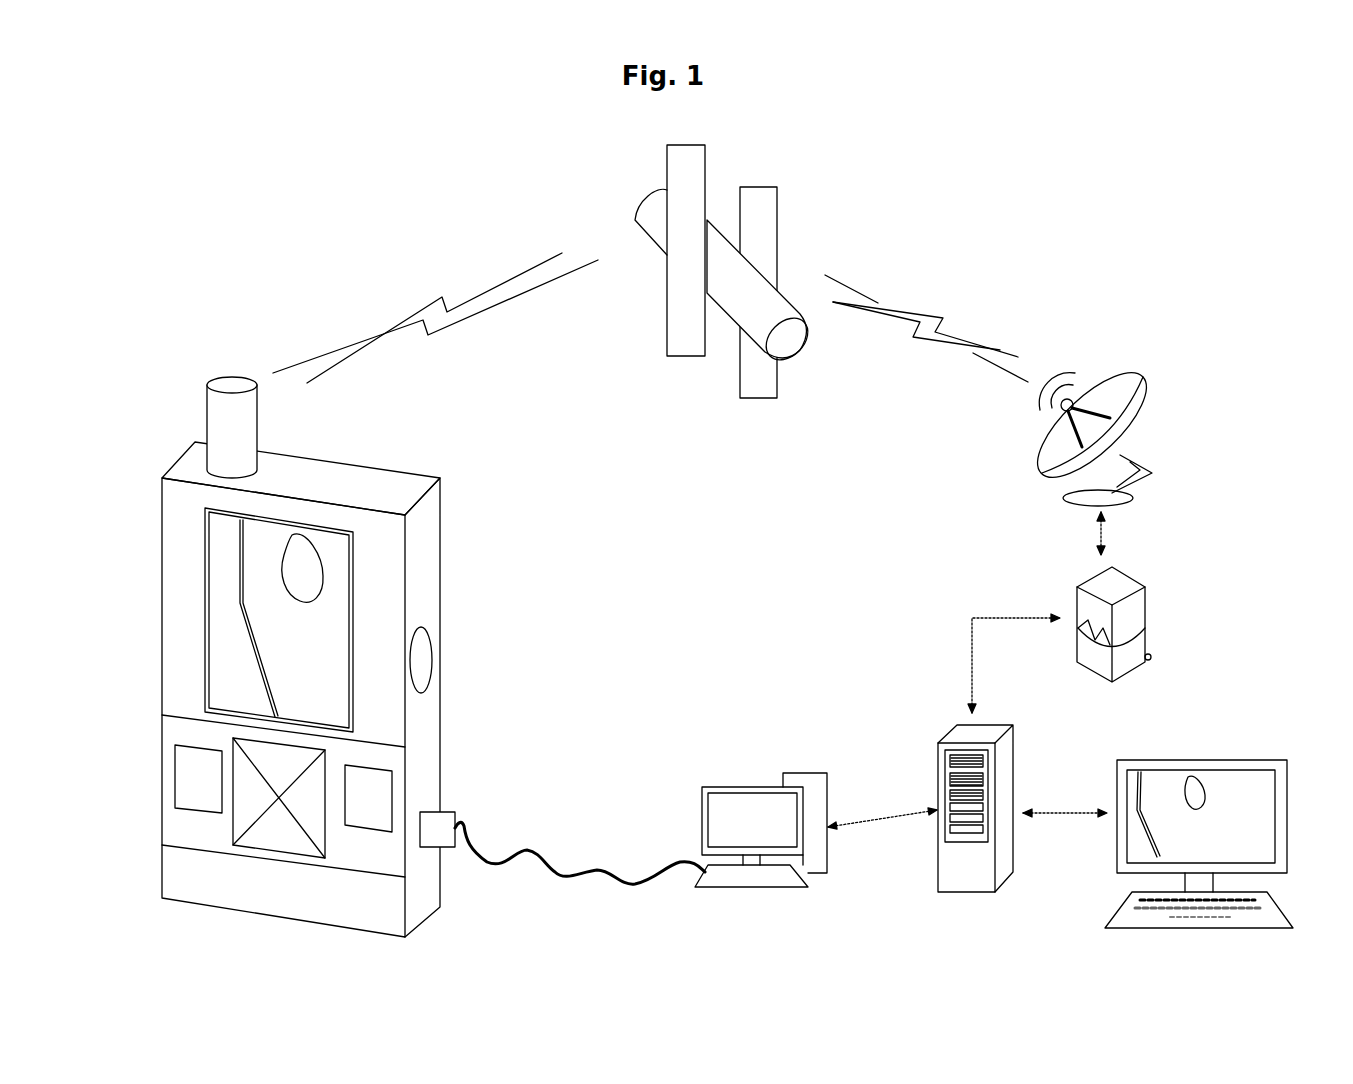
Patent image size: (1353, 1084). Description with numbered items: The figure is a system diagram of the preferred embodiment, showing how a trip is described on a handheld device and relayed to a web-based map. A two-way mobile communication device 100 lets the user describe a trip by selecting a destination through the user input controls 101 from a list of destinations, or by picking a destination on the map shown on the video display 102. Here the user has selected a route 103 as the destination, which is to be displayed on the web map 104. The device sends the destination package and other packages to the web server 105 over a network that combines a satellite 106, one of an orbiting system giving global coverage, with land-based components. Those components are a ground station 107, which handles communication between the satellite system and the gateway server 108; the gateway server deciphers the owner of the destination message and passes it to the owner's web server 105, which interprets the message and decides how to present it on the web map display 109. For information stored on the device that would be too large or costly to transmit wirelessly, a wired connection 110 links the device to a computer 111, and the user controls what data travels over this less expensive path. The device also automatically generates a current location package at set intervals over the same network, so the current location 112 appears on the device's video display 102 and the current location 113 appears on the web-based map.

The 2-way mobile communication device 100 is at (308, 657).
The user input controls 101 is at (250, 860).
The video display 102 is at (258, 619).
The route 103 is at (238, 625).
The web map 104 is at (1148, 815).
The web server 105 is at (1028, 763).
The satellite 106 is at (797, 197).
The ground station 107 is at (1160, 382).
The gateway server 108 is at (1160, 600).
The web map display 109 is at (1199, 819).
The wired connection 110 is at (597, 863).
The computer 111 is at (761, 780).
The current location 112 is at (296, 681).
The current location 113 is at (1175, 833).